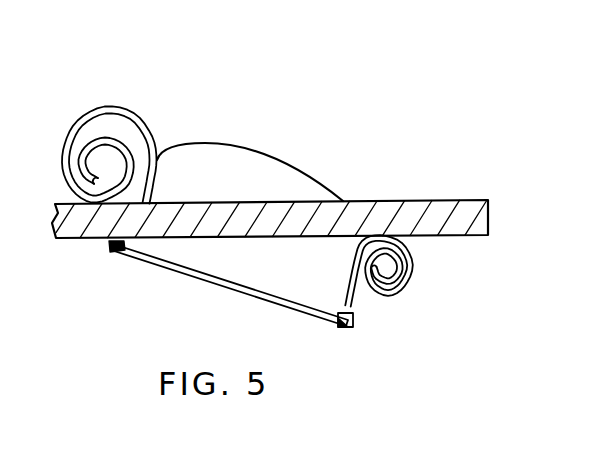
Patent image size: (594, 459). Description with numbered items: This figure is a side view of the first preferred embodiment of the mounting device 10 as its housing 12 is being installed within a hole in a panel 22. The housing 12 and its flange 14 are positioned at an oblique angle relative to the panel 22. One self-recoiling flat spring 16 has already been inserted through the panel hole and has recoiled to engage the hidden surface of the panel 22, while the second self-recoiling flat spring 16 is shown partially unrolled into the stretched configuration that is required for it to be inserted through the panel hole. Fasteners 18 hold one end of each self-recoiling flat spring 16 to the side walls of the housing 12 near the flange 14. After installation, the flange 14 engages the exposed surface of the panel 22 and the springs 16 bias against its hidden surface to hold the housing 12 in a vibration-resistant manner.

The mounting device 10 is at (377, 104).
The housing 12 is at (296, 166).
The flange 14 is at (253, 296).
The self-recoiling flat spring 16 is at (110, 143).
The fastener 18 is at (114, 251).
The panel 22 is at (489, 206).